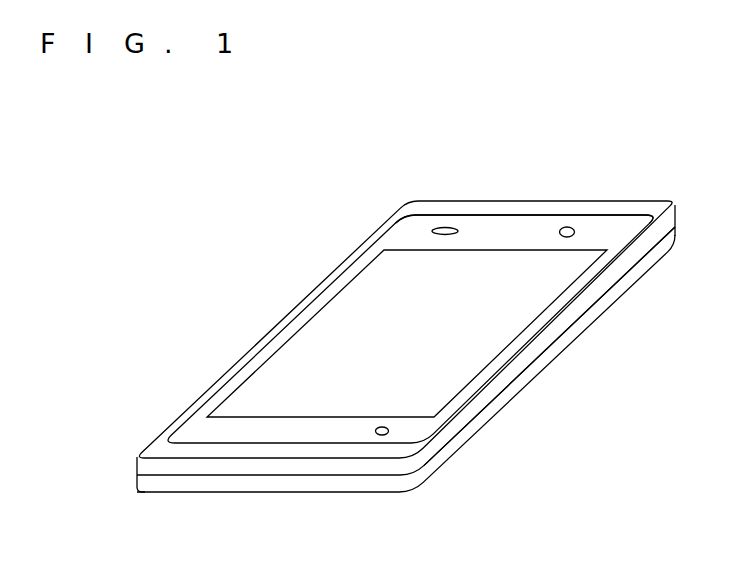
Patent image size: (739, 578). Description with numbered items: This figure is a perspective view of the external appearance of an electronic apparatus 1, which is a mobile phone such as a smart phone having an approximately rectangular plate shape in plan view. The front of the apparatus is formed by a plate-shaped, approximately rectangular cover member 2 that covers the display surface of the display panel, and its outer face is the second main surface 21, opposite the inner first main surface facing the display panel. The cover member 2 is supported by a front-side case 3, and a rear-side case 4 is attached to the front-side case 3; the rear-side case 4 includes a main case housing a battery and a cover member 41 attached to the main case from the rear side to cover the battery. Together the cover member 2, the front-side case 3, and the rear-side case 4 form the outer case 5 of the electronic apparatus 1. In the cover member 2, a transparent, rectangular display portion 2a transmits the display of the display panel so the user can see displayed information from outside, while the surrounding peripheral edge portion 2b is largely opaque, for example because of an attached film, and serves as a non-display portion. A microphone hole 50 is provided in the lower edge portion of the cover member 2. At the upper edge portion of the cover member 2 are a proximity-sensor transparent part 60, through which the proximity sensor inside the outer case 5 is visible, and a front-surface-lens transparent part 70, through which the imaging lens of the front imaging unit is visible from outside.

The electronic apparatus 1 is at (493, 181).
The cover member 2 is at (555, 275).
The display portion 2a is at (470, 343).
The peripheral edge portion 2b is at (418, 428).
The second main surface 21 is at (520, 310).
The front-side case 3 is at (404, 463).
The rear-side case 4 is at (412, 477).
The cover member 41 is at (380, 485).
The outer case 5 is at (647, 195).
The microphone hole 50 is at (380, 436).
The proximity-sensor transparent part 60 is at (445, 227).
The front-surface-lens transparent part 70 is at (568, 227).